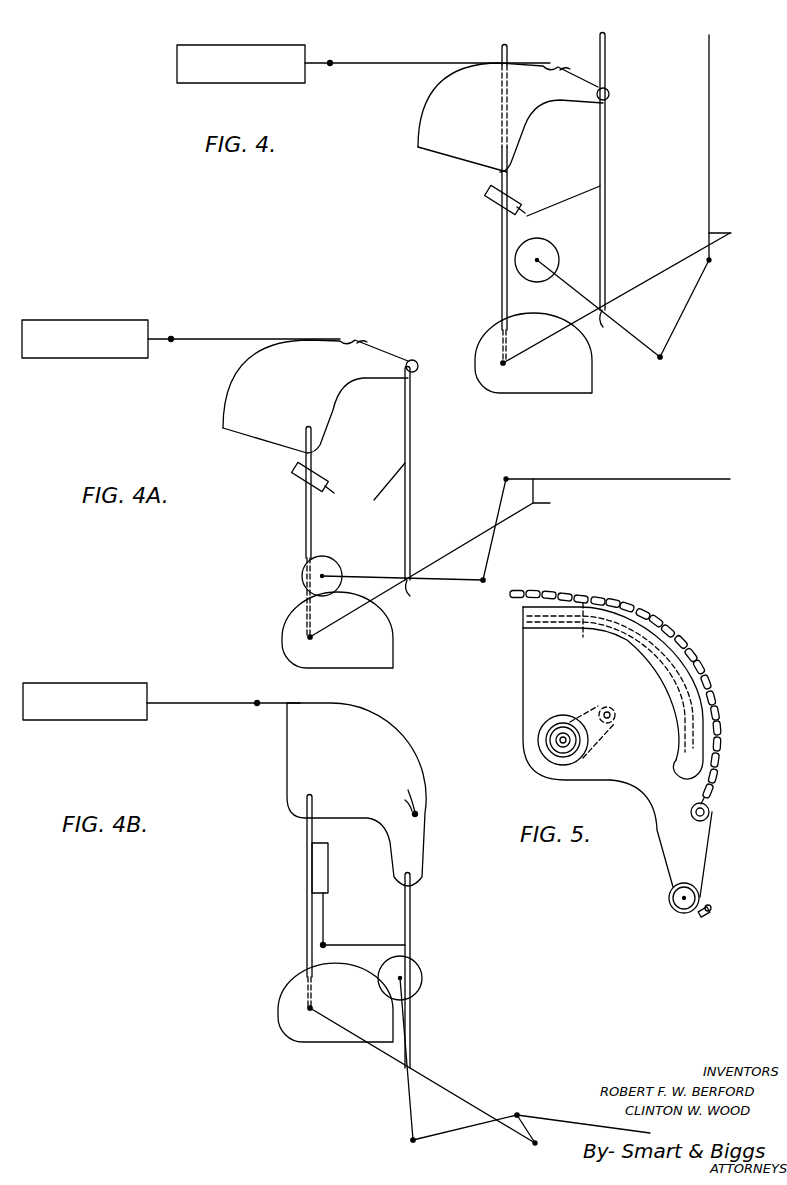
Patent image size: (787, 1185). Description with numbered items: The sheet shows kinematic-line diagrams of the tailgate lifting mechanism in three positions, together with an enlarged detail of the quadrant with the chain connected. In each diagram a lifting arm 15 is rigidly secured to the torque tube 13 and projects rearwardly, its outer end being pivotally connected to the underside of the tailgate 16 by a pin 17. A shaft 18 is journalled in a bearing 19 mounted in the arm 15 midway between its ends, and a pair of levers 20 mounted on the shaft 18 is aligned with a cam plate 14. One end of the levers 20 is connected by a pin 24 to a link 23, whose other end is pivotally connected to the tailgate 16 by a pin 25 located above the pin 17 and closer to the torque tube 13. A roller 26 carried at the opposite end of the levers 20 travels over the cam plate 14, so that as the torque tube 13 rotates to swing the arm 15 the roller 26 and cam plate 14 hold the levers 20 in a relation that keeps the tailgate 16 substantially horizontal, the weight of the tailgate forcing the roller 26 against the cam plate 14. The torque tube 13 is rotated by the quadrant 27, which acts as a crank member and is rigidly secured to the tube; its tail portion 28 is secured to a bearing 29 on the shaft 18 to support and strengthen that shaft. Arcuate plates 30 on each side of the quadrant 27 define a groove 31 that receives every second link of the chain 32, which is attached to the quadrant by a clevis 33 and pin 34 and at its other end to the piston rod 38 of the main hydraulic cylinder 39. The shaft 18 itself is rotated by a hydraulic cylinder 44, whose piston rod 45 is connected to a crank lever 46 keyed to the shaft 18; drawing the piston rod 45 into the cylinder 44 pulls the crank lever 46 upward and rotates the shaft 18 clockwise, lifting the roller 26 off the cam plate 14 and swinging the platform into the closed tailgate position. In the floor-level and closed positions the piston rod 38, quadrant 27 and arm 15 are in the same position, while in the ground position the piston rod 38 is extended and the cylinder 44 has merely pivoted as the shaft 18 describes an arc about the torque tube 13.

In FIG. 4, the torque tube 13 is at (500, 243).
In FIG. 4A, the torque tube 13 is at (306, 521).
In FIG. 4B, the torque tube 13 is at (306, 837).
In FIG. 5, the torque tube 13 is at (548, 760).
In FIG. 4, the cam plate 14 is at (534, 321).
In FIG. 4A, the cam plate 14 is at (290, 643).
In FIG. 4B, the cam plate 14 is at (290, 999).
In FIG. 4, the lifting arm 15 is at (634, 286).
In FIG. 4A, the lifting arm 15 is at (441, 556).
In FIG. 4B, the lifting arm 15 is at (438, 1085).
In FIG. 4, the tailgate 16 is at (707, 125).
In FIG. 4A, the tailgate 16 is at (636, 477).
In FIG. 4B, the tailgate 16 is at (577, 1126).
In FIG. 4, the pin 17 is at (731, 216).
In FIG. 4A, the pin 17 is at (560, 498).
In FIG. 4B, the pin 17 is at (534, 1146).
In FIG. 4, the shaft 18 is at (607, 222).
In FIG. 4A, the shaft 18 is at (413, 482).
In FIG. 4B, the shaft 18 is at (413, 913).
In FIG. 4, the bearing 19 is at (615, 333).
In FIG. 4A, the bearing 19 is at (428, 597).
In FIG. 4B, the bearing 19 is at (405, 1068).
In FIG. 4, the lever 20 is at (578, 288).
In FIG. 4A, the lever 20 is at (370, 579).
In FIG. 4B, the lever 20 is at (410, 1104).
In FIG. 4, the link 23 is at (683, 318).
In FIG. 4A, the link 23 is at (490, 559).
In FIG. 4B, the link 23 is at (456, 1131).
In FIG. 4, the pin 24 is at (660, 362).
In FIG. 4A, the pin 24 is at (480, 590).
In FIG. 4B, the pin 24 is at (411, 1140).
In FIG. 4, the pin 25 is at (710, 263).
In FIG. 4A, the pin 25 is at (505, 478).
In FIG. 4B, the pin 25 is at (517, 1113).
In FIG. 4, the roller 26 is at (552, 249).
In FIG. 4A, the roller 26 is at (325, 558).
In FIG. 4B, the roller 26 is at (423, 975).
In FIG. 4, the quadrant 27 is at (437, 118).
In FIG. 4A, the quadrant 27 is at (232, 405).
In FIG. 4B, the quadrant 27 is at (293, 766).
In FIG. 5, the quadrant 27 is at (623, 763).
In FIG. 4, the tail portion 28 is at (565, 72).
In FIG. 4A, the tail portion 28 is at (377, 353).
In FIG. 4B, the tail portion 28 is at (417, 843).
In FIG. 5, the tail portion 28 is at (667, 852).
In FIG. 5, the bearing 29 is at (673, 882).
In FIG. 5, the arcuate plate 30 is at (535, 621).
In FIG. 5, the groove 31 is at (585, 636).
In FIG. 4, the chain 32 is at (416, 62).
In FIG. 4A, the chain 32 is at (239, 334).
In FIG. 4B, the chain 32 is at (270, 713).
In FIG. 5, the chain 32 is at (661, 625).
In FIG. 5, the clevis 33 is at (706, 794).
In FIG. 5, the pin 34 is at (711, 819).
In FIG. 4, the piston rod 38 is at (320, 58).
In FIG. 4A, the piston rod 38 is at (162, 334).
In FIG. 4B, the piston rod 38 is at (166, 700).
In FIG. 4, the main hydraulic cylinder 39 is at (235, 50).
In FIG. 4A, the main hydraulic cylinder 39 is at (86, 326).
In FIG. 4B, the main hydraulic cylinder 39 is at (76, 682).
In FIG. 4, the hydraulic cylinder 44 is at (487, 205).
In FIG. 4A, the hydraulic cylinder 44 is at (288, 470).
In FIG. 4B, the hydraulic cylinder 44 is at (329, 863).
In FIG. 4, the piston rod 45 is at (527, 209).
In FIG. 4A, the piston rod 45 is at (342, 493).
In FIG. 4B, the piston rod 45 is at (326, 913).
In FIG. 4, the crank lever 46 is at (570, 188).
In FIG. 4A, the crank lever 46 is at (378, 500).
In FIG. 4B, the crank lever 46 is at (353, 946).